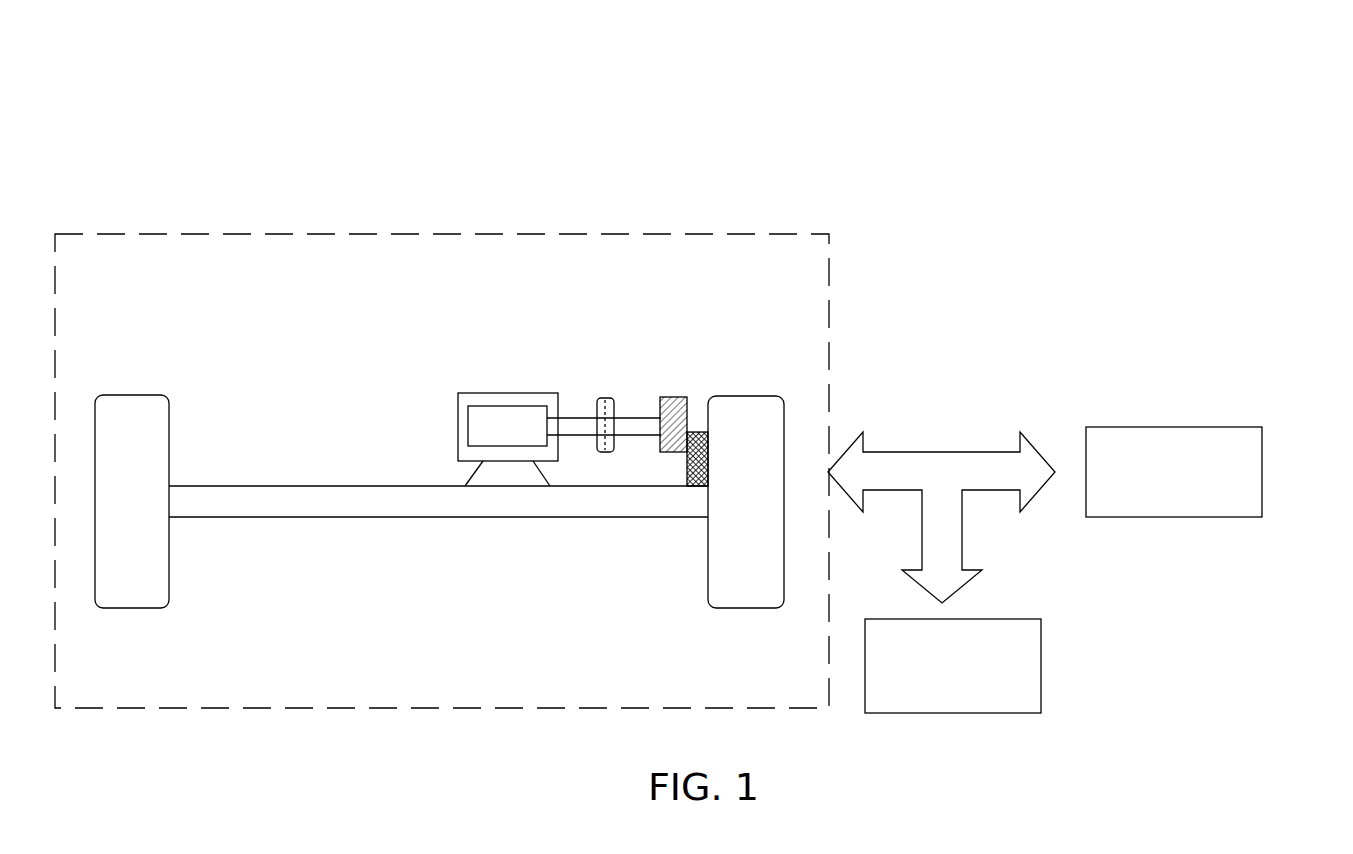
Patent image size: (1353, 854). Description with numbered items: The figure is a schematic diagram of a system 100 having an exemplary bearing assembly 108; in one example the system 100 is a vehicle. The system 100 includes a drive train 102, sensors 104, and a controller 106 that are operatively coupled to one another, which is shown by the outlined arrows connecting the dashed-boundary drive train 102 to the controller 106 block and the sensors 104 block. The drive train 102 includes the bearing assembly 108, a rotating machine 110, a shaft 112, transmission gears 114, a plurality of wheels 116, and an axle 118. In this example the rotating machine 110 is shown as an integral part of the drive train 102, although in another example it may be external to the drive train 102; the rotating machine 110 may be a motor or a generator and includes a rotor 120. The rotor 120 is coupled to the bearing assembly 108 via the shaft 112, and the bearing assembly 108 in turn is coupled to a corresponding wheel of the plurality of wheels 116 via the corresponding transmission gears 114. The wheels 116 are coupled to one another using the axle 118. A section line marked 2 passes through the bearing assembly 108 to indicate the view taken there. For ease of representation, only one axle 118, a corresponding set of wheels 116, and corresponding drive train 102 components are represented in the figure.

The system 100 is at (1172, 114).
The drive train 102 is at (829, 279).
The sensors 104 is at (1041, 662).
The controller 106 is at (1262, 468).
The bearing assembly 108 is at (597, 402).
The rotating machine 110 is at (483, 393).
The shaft 112 is at (568, 424).
The transmission gears 114 is at (714, 373).
The plurality of wheels 116 is at (131, 608).
The axle 118 is at (294, 517).
The rotor 120 is at (504, 458).
The section line 2- 2 is at (605, 398).